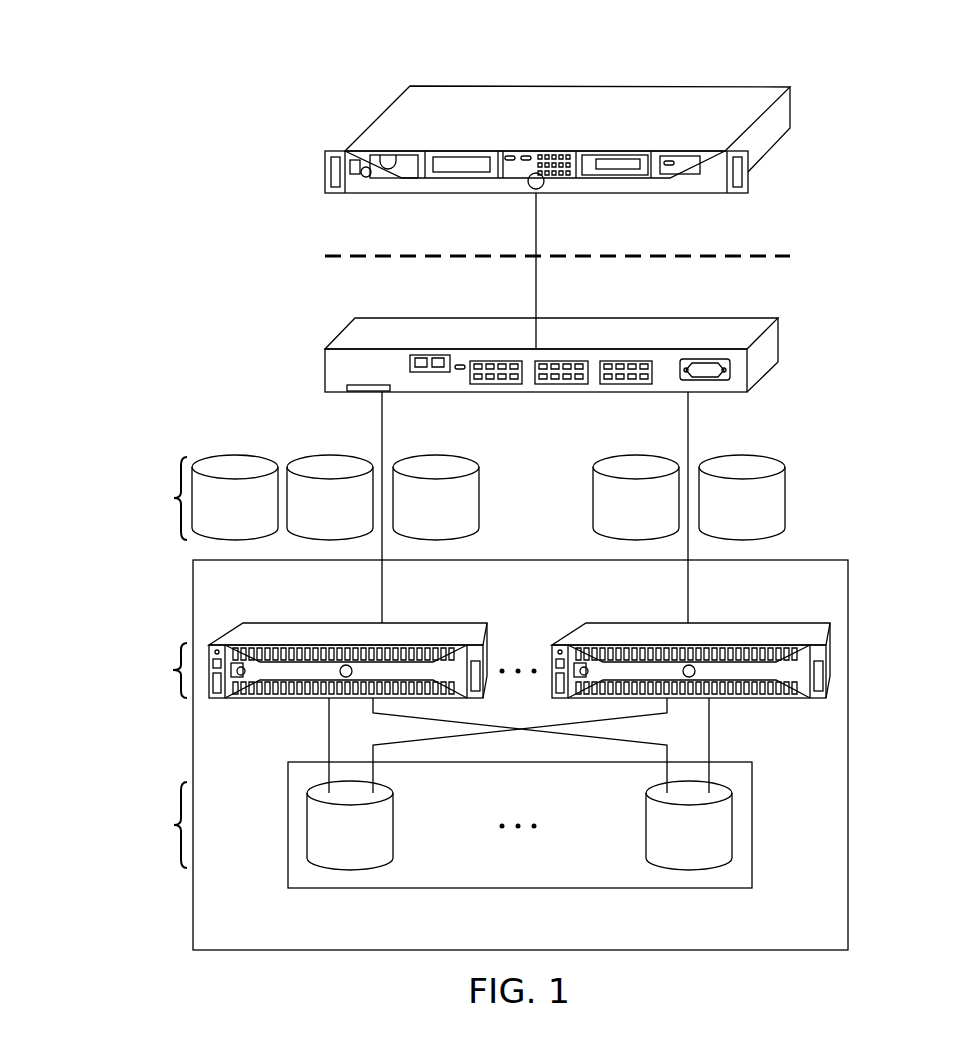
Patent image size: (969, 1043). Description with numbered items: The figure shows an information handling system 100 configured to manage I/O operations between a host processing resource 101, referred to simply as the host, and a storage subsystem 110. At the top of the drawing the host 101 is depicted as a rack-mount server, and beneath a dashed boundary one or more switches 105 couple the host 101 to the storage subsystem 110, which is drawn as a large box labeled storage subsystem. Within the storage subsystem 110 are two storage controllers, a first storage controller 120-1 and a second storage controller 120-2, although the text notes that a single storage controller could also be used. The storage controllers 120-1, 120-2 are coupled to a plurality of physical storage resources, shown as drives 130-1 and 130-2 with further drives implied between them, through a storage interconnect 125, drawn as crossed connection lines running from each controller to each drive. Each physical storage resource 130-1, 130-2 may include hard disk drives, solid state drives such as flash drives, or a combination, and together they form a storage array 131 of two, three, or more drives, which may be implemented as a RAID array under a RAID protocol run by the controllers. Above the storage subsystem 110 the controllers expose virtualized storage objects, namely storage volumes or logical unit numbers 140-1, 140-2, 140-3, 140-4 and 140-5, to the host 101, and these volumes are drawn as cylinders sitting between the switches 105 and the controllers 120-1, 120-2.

The information handling system 100 is at (189, 63).
The host processing resource 101 is at (630, 86).
The switch(es) 105 is at (778, 337).
The storage subsystem 110 is at (190, 890).
The first storage controller 120-1 is at (298, 623).
The second storage controller 120-2 is at (740, 623).
The storage interconnect 125 is at (329, 728).
The physical storage resource 130-1 is at (382, 847).
The physical storage resource 130-2 is at (658, 847).
The storage array 131 is at (758, 836).
The storage volume 140-1 is at (203, 520).
The storage volume 140-2 is at (298, 520).
The storage volume 140-3 is at (404, 520).
The storage volume 140-4 is at (604, 520).
The storage volume 140-5 is at (710, 520).